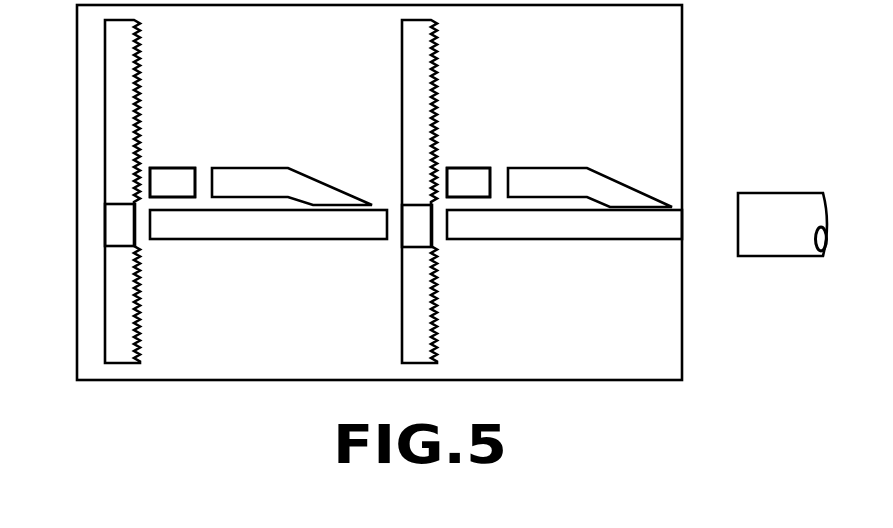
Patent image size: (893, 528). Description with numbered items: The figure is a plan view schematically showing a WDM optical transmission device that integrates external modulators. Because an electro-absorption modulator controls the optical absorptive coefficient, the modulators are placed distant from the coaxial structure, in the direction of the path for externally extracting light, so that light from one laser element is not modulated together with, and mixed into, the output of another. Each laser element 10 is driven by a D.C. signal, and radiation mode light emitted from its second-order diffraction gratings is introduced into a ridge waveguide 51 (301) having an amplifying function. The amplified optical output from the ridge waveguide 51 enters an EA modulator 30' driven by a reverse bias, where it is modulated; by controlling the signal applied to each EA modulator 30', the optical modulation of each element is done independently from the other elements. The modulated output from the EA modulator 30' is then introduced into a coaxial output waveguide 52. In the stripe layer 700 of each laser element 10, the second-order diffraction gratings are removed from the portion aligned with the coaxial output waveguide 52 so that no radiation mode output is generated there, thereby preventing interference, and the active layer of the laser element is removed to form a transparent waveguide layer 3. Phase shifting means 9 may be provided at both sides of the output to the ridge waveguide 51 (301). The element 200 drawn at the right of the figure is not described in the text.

The laser element 10 is at (125, 64).
The phase shifting means 9 is at (133, 171).
The ridge waveguide 51 is at (168, 176).
The ridge waveguide 301 is at (167, 146).
The EA modulator 30' is at (442, 142).
The coaxial output waveguide 52 is at (275, 232).
The transparent waveguide layer 3 is at (134, 239).
The stripe layer 700 is at (118, 241).
The cylindrical member 200 is at (775, 216).